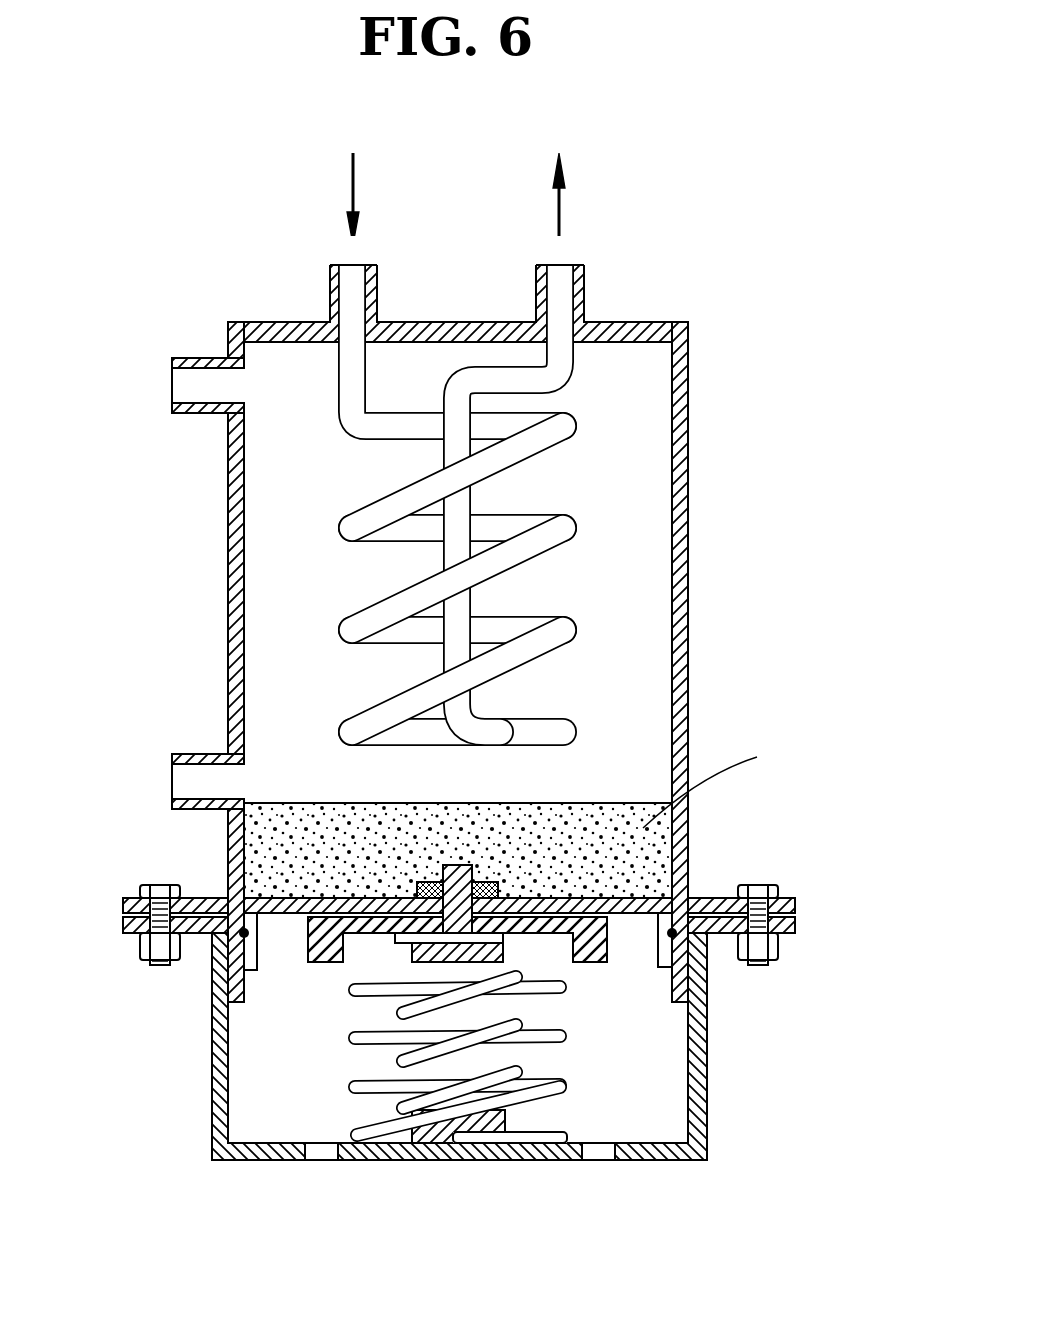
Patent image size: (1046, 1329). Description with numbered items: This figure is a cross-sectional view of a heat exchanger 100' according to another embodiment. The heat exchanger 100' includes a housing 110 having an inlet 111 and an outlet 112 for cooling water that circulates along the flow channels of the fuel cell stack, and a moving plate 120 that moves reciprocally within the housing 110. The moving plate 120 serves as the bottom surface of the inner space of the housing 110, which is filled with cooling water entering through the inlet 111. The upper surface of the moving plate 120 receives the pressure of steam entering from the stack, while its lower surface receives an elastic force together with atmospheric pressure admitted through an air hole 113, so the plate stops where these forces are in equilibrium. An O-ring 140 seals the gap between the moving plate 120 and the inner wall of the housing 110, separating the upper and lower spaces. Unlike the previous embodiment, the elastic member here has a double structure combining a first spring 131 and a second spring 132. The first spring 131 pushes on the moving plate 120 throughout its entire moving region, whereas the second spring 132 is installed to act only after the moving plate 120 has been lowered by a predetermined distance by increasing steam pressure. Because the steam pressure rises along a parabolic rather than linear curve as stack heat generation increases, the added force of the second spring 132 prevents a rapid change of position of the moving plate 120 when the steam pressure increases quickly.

The heat exchanger 100' is at (482, 685).
The housing 110 is at (684, 522).
The inlet 111 is at (172, 386).
The outlet 112 is at (172, 782).
The air hole 113 is at (328, 1150).
The moving plate 120 is at (633, 898).
The first spring 131 is at (565, 1000).
The second spring 132 is at (572, 1092).
The O-ring 140 is at (707, 957).